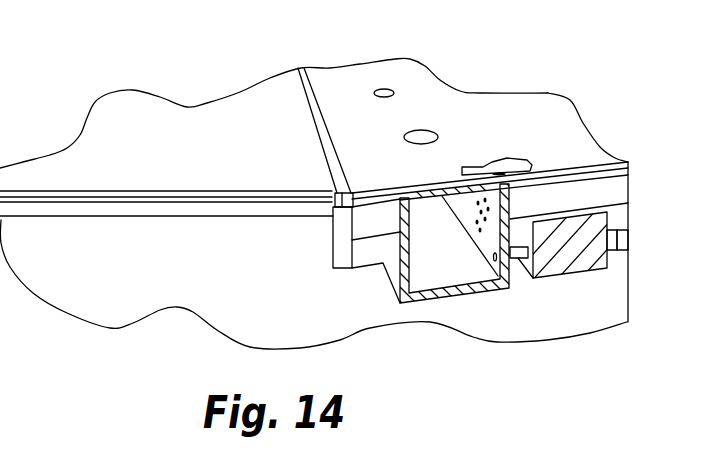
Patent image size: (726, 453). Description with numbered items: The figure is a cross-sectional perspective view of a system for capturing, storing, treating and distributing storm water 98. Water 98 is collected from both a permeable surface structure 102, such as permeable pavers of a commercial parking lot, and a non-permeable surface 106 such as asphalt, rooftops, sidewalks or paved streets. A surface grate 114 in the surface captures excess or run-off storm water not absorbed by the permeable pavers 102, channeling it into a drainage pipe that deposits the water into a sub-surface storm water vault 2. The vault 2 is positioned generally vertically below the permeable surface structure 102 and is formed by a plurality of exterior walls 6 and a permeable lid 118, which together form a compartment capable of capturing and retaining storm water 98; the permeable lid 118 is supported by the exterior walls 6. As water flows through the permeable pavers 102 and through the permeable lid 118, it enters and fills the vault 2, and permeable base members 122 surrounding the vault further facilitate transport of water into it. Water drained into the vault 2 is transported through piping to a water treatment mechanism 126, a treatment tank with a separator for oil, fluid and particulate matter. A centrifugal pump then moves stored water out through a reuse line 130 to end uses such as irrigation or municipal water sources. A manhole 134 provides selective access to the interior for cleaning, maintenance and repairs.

The sub-surface storm water vault 2 is at (447, 268).
The exterior walls 6 is at (393, 278).
The storm water 98 is at (523, 165).
The permeable surface structure 102 is at (497, 110).
The non-permeable surface 106 is at (85, 168).
The surface grate 114 is at (308, 88).
The permeable lid 118 is at (447, 186).
The permeable base members 122 is at (607, 190).
The water treatment mechanism 126 is at (580, 263).
The reuse line 130 is at (620, 246).
The manhole 134 is at (420, 137).